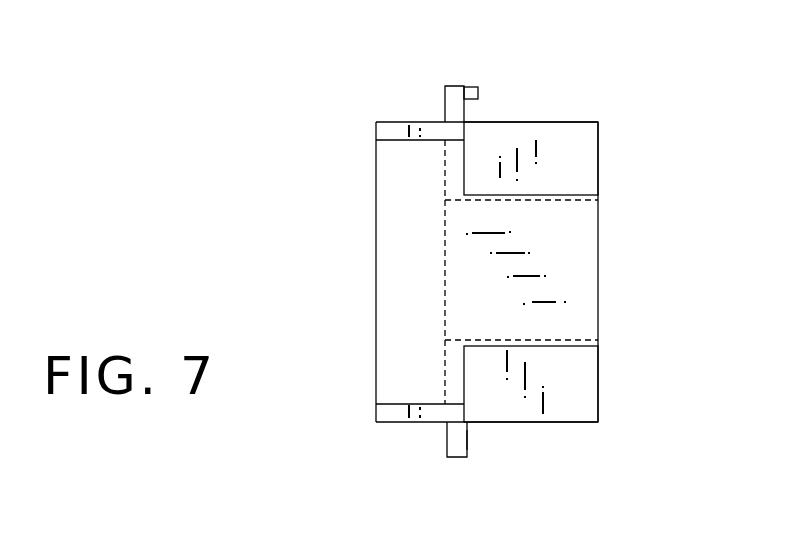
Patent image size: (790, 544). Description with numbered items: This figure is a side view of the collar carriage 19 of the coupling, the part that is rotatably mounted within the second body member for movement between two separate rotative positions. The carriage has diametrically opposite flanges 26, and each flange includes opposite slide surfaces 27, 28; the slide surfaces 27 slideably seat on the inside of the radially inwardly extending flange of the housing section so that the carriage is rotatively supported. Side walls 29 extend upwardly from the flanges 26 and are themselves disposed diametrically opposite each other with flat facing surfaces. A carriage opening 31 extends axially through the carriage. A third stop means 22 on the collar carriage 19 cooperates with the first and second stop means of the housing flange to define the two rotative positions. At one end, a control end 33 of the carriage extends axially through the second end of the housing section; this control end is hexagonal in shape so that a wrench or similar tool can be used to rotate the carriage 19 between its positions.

The collar carriage 19 is at (640, 213).
The third stop means 22 is at (478, 93).
The flanges 26 is at (460, 86).
The slide surface 27 is at (470, 440).
The slide surface 28 is at (445, 106).
The side walls 29 is at (376, 232).
The carriage opening 31 is at (563, 343).
The control end 33 is at (570, 168).